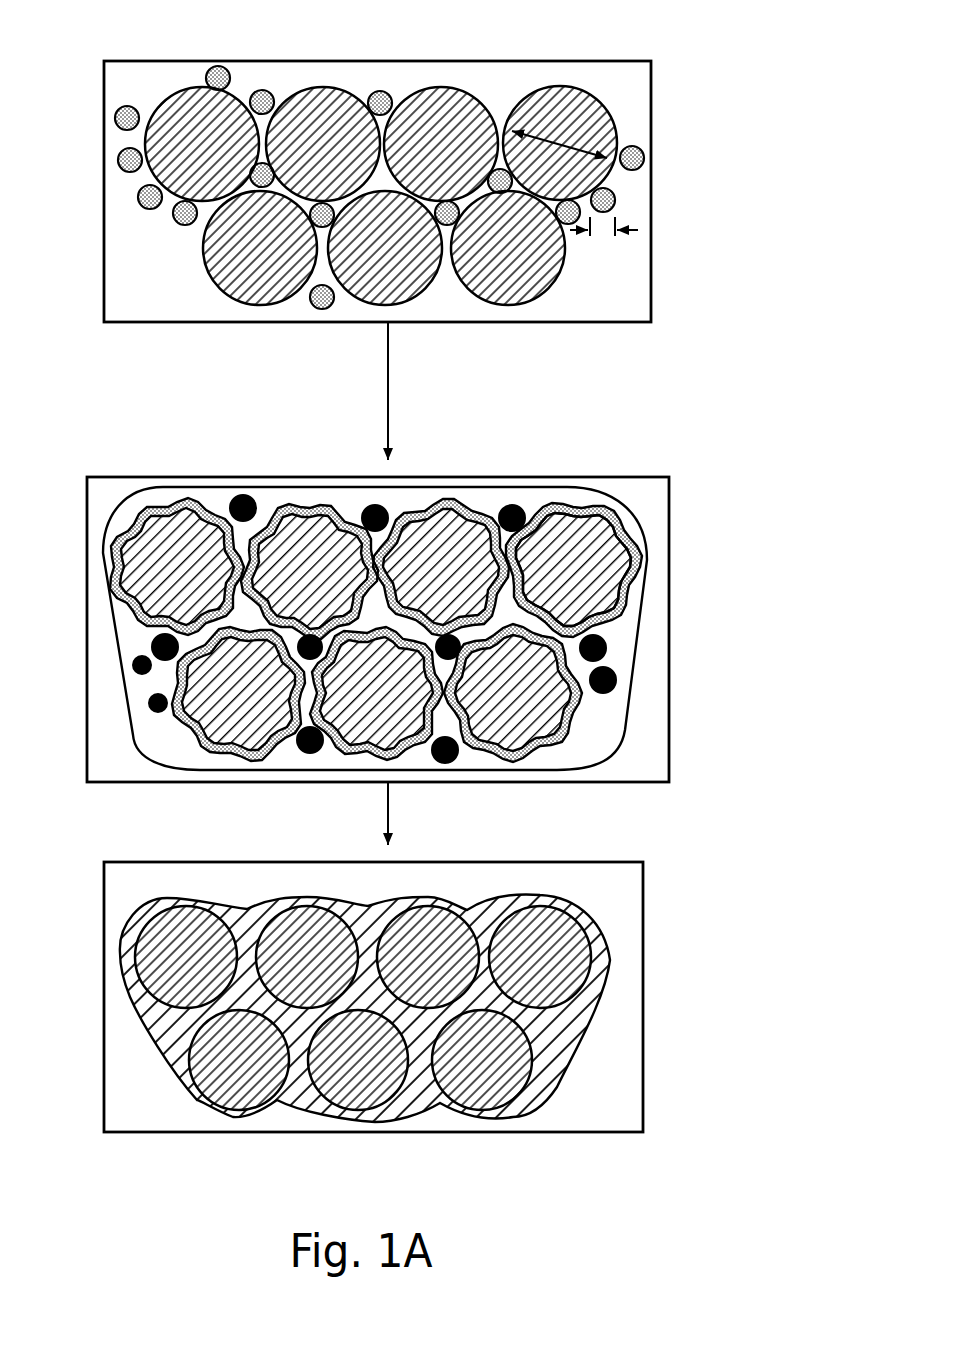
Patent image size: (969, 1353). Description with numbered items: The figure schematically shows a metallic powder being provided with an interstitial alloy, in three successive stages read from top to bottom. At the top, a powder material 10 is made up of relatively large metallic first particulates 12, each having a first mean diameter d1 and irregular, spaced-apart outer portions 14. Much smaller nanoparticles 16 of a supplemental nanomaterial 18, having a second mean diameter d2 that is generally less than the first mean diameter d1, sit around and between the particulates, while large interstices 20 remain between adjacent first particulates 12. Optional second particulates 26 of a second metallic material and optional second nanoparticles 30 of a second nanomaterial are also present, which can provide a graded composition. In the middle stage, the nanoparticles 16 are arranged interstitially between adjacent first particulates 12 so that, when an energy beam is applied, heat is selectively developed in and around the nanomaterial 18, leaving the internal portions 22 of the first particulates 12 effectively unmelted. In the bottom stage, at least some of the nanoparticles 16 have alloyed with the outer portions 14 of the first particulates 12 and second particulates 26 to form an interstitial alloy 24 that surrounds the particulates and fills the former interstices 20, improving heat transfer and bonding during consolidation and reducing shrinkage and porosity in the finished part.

The powder material 10 is at (508, 80).
The first particulates 12 is at (432, 105).
The outer portions 14 is at (168, 96).
The nanoparticles 16 is at (262, 91).
The supplemental nanomaterial 18 is at (113, 144).
The interstices 20 is at (290, 190).
The internal portions 22 is at (580, 575).
The interstitial alloy 24 is at (254, 918).
The second particulates 26 is at (510, 273).
The second nanoparticles 30 is at (322, 308).
The first mean diameter d1 is at (567, 140).
The second mean diameter d2 is at (605, 234).